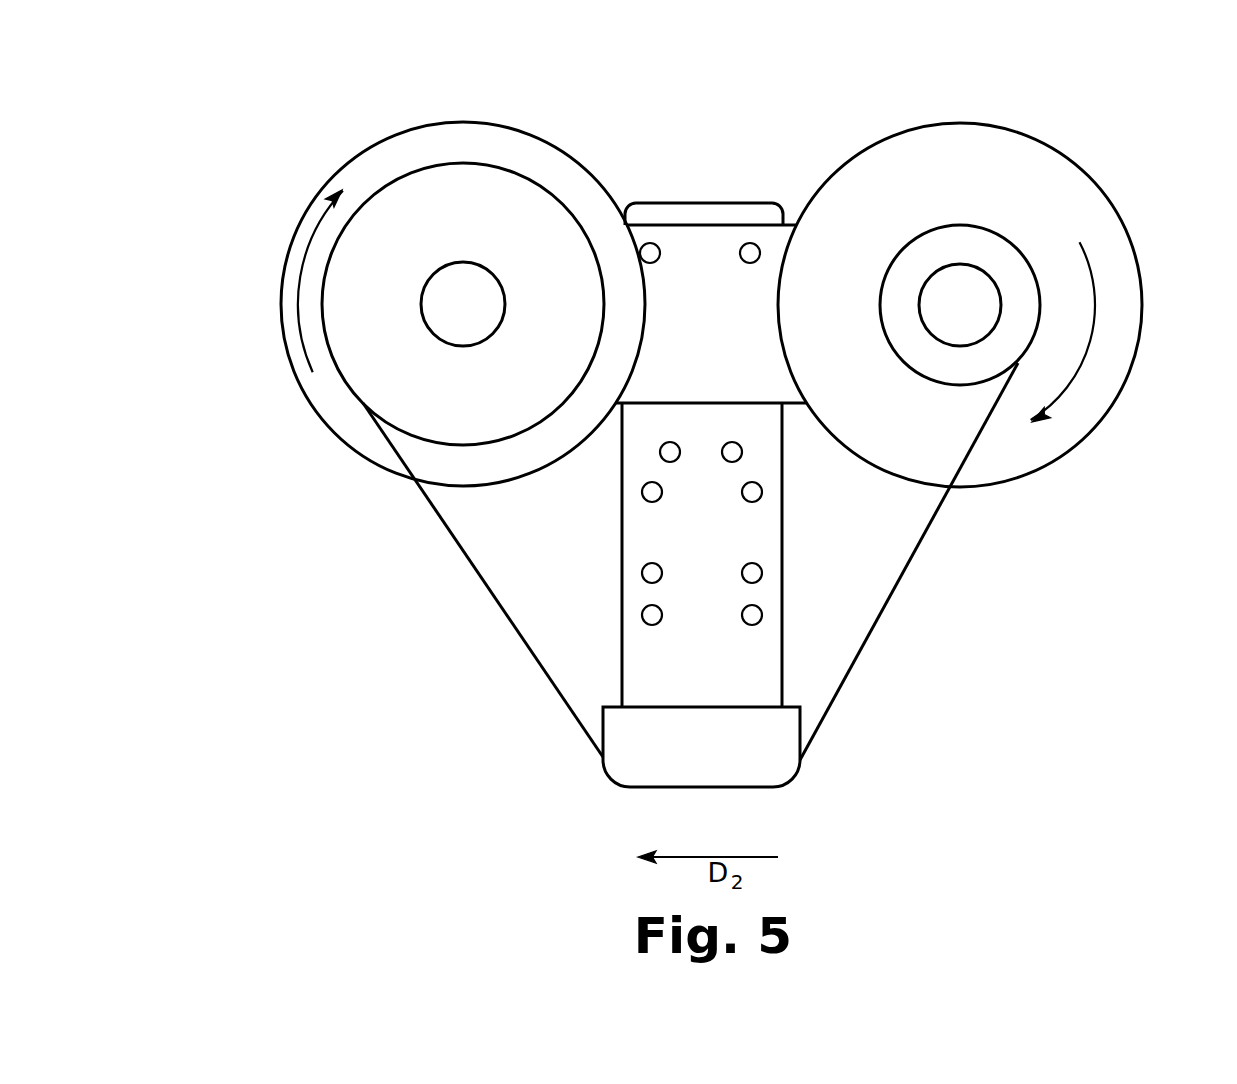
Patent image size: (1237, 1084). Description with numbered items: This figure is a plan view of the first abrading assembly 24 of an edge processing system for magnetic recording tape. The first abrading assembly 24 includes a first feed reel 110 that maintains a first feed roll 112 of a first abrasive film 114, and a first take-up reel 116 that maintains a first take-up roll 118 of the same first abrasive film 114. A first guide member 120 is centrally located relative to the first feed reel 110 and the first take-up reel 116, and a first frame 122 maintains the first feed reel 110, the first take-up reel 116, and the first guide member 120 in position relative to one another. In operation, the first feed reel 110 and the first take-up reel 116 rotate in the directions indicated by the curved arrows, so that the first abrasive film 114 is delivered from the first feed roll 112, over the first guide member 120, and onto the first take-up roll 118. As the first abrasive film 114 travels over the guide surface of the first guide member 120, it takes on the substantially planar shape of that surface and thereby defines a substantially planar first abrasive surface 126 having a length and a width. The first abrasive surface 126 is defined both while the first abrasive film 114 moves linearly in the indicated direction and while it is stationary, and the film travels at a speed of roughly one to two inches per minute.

The first abrading assembly 24 is at (245, 610).
The first feed reel 110 is at (1065, 125).
The first feed roll 112 is at (1020, 288).
The first abrasive film 114 is at (910, 558).
The first take-up reel 116 is at (353, 132).
The first take-up roll 118 is at (503, 205).
The first guide member 120 is at (735, 695).
The first frame 122 is at (767, 193).
The first abrasive surface 126 is at (762, 792).